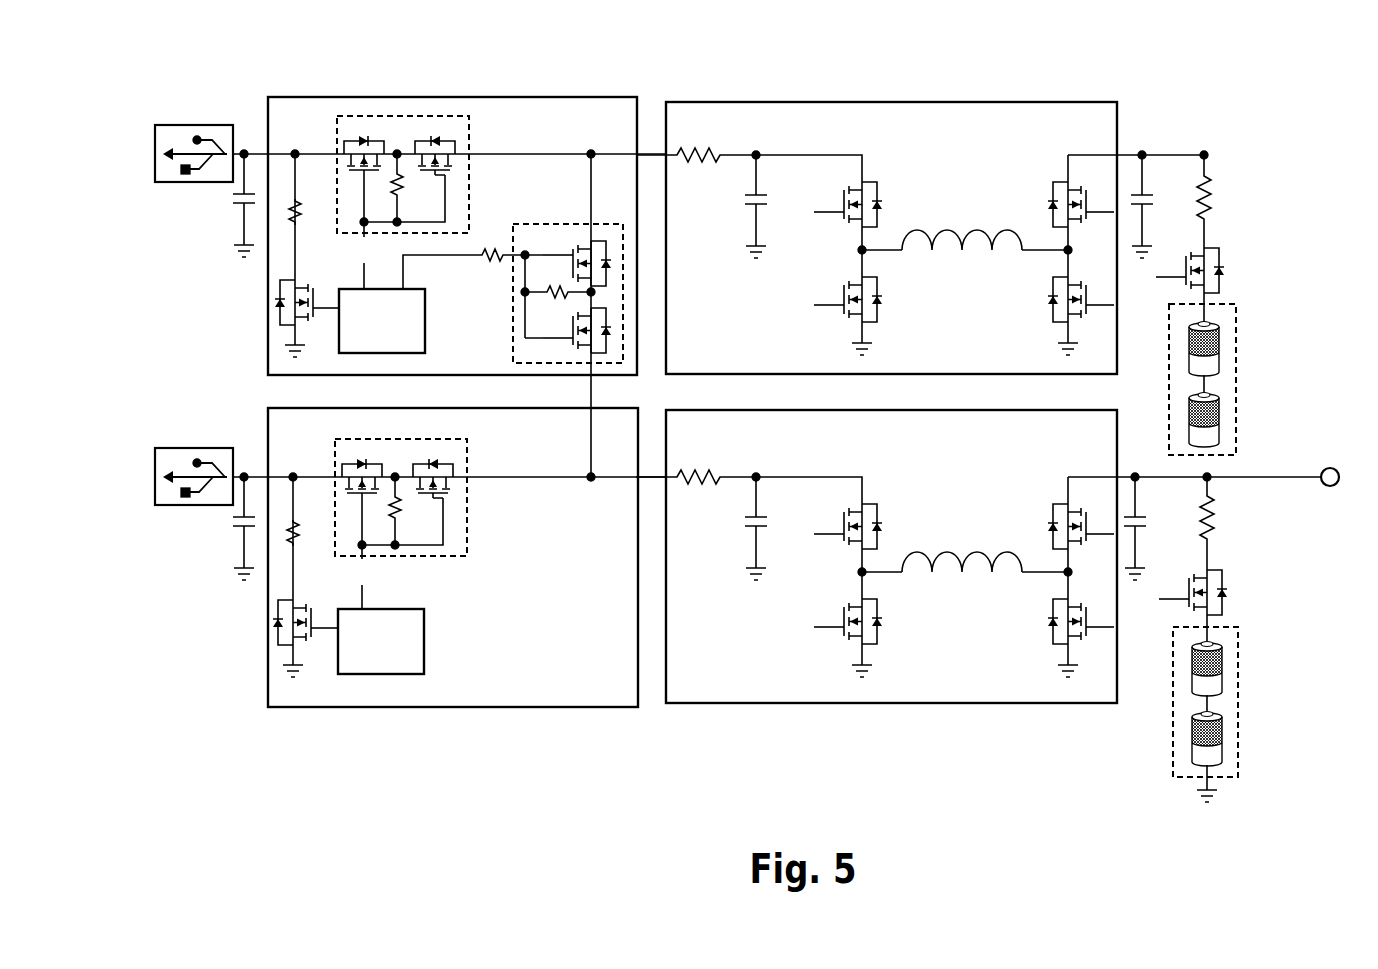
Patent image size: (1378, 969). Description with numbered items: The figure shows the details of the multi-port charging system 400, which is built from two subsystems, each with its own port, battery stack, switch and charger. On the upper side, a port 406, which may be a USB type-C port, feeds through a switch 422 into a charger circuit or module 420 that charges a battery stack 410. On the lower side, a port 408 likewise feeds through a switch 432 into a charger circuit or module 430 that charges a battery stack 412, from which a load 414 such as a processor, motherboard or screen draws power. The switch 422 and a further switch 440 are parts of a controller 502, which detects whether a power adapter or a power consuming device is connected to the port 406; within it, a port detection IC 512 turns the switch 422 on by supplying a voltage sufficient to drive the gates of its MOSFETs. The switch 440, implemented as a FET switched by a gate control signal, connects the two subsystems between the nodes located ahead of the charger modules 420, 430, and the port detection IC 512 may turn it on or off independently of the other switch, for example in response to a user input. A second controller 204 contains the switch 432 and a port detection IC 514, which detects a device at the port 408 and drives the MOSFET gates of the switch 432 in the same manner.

The second charging path circuit 204 is at (408, 708).
The system 400 is at (576, 822).
The port 406 is at (176, 125).
The port 408 is at (176, 448).
The battery stack 410 is at (1238, 337).
The battery stack 412 is at (1172, 750).
The load 414 is at (1329, 459).
The charger circuit or module 420 is at (983, 139).
The switch 422 is at (470, 172).
The charger circuit or module 430 is at (983, 447).
The switch 432 is at (466, 503).
The switch 440 is at (513, 345).
The controller 502 is at (413, 97).
The port detection IC 512 is at (360, 339).
The port detection IC 514 is at (359, 657).